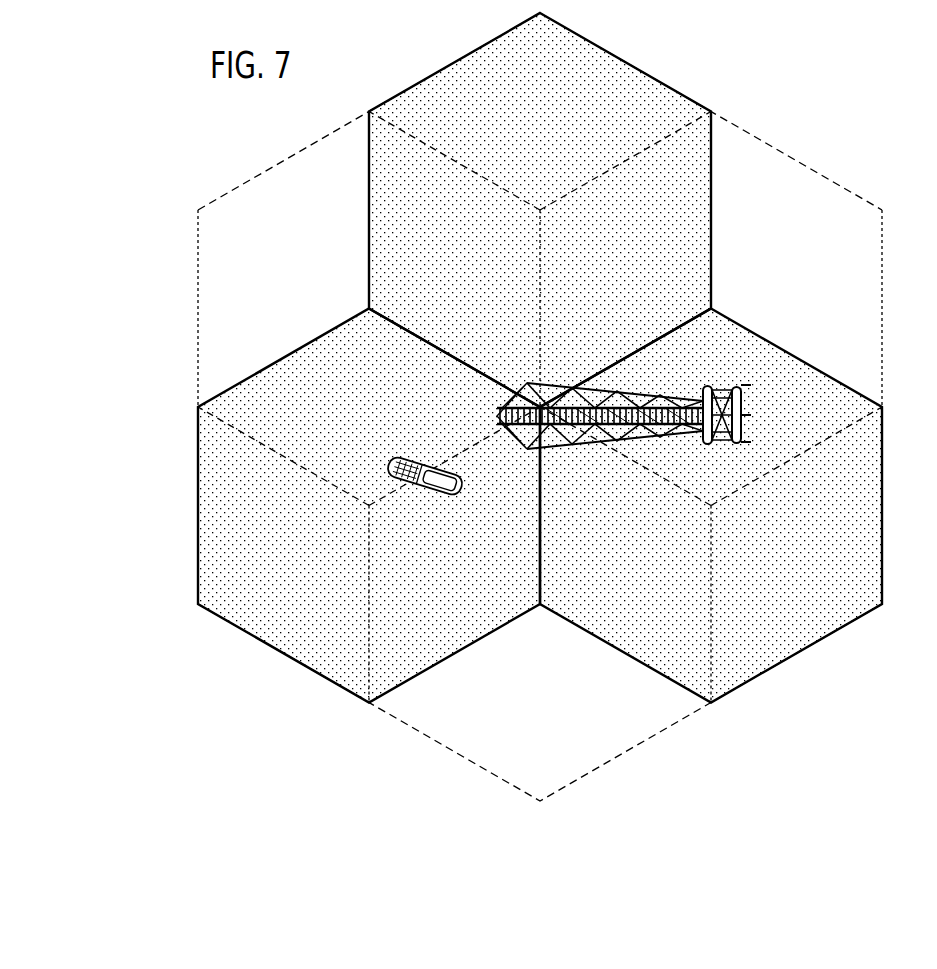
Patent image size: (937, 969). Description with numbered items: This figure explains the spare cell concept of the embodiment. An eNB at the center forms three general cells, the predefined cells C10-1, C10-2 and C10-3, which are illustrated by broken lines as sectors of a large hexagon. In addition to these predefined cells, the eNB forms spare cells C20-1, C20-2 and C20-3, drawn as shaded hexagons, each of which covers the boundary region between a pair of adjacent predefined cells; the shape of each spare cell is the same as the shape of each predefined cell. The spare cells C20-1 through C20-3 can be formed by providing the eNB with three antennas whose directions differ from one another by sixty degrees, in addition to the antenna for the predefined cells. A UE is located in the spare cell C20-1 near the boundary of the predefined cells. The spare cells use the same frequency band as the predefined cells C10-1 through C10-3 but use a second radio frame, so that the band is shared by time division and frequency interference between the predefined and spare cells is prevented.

The predefined cell C10-1 is at (195, 303).
The predefined cell C10-2 is at (663, 730).
The predefined cell C10-3 is at (884, 278).
The spare cell C20-1 is at (197, 517).
The spare cell C20-2 is at (825, 640).
The spare cell C20-3 is at (680, 90).
The element eNB is at (636, 416).
The element UE is at (429, 475).